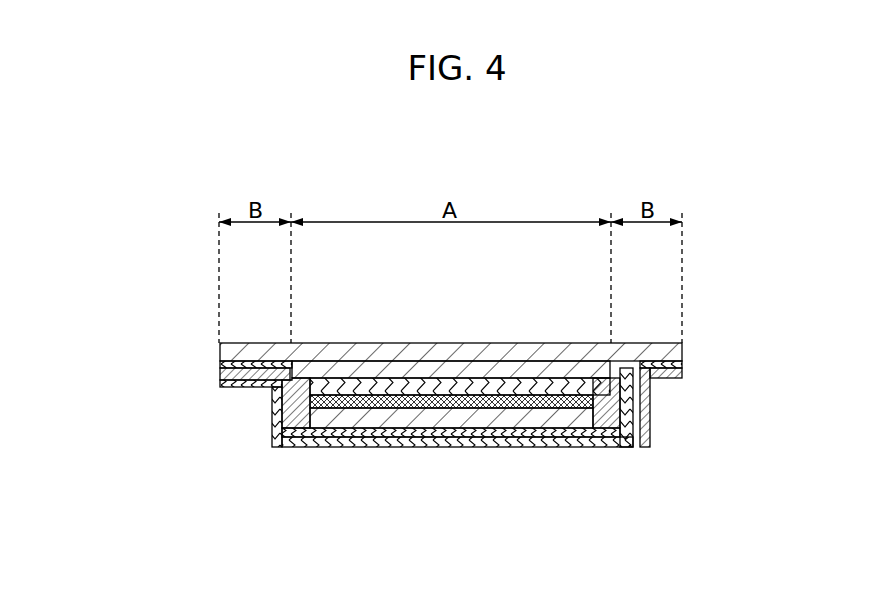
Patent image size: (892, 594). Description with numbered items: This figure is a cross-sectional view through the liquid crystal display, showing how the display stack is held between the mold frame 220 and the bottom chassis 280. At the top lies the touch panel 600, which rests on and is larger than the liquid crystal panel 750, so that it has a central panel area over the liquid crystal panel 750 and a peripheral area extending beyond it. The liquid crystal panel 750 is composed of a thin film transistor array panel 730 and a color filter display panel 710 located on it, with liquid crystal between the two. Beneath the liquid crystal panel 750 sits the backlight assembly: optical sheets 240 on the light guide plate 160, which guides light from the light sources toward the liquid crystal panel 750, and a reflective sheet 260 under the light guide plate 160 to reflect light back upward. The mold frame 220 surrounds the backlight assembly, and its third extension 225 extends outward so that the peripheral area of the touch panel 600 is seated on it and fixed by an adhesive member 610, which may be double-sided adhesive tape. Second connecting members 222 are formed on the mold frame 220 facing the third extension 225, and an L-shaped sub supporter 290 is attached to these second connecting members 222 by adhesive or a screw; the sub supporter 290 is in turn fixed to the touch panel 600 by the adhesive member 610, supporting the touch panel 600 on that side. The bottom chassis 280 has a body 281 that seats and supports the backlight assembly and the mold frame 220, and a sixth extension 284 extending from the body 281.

The light guide plate 160 is at (502, 416).
The mold frame 220 is at (439, 457).
The second connecting members 222 is at (697, 363).
The third extension 225 is at (232, 373).
The optical sheets 240 is at (556, 418).
The reflective sheet 260 is at (412, 433).
The bottom chassis 280 is at (343, 443).
The body 281 is at (625, 413).
The sixth extension 284 is at (228, 384).
The sub supporter 290 is at (670, 377).
The touch panel 600 is at (513, 357).
The adhesive member 610 is at (253, 366).
The color filter display panel 710 is at (407, 370).
The thin film transistor array panel 730 is at (341, 388).
The liquid crystal panel 750 is at (420, 282).